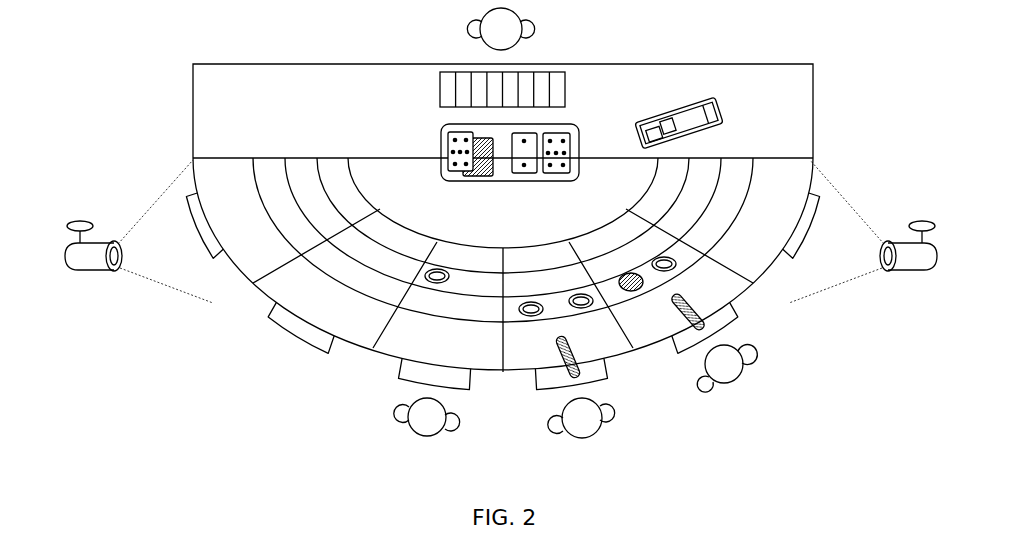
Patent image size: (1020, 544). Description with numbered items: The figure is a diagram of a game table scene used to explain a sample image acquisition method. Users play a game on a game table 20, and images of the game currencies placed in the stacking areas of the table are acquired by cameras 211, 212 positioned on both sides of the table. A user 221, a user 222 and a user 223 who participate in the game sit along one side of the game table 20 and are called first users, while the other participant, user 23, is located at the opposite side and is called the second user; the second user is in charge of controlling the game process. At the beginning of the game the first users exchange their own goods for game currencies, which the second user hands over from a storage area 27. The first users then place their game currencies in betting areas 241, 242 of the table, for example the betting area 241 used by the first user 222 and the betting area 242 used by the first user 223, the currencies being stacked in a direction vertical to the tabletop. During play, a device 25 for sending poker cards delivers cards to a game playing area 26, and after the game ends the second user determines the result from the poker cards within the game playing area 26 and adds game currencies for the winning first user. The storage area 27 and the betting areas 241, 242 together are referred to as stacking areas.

The game table 20 is at (817, 105).
The user 23 is at (518, 13).
The device for sending poker card 25 is at (694, 112).
The game playing area 26 is at (440, 144).
The storage area 27 is at (447, 85).
The camera 211 is at (86, 269).
The camera 212 is at (893, 240).
The user 221 is at (406, 421).
The user 222 is at (589, 427).
The user 223 is at (703, 387).
The betting area 241 is at (531, 318).
The betting area 242 is at (632, 293).